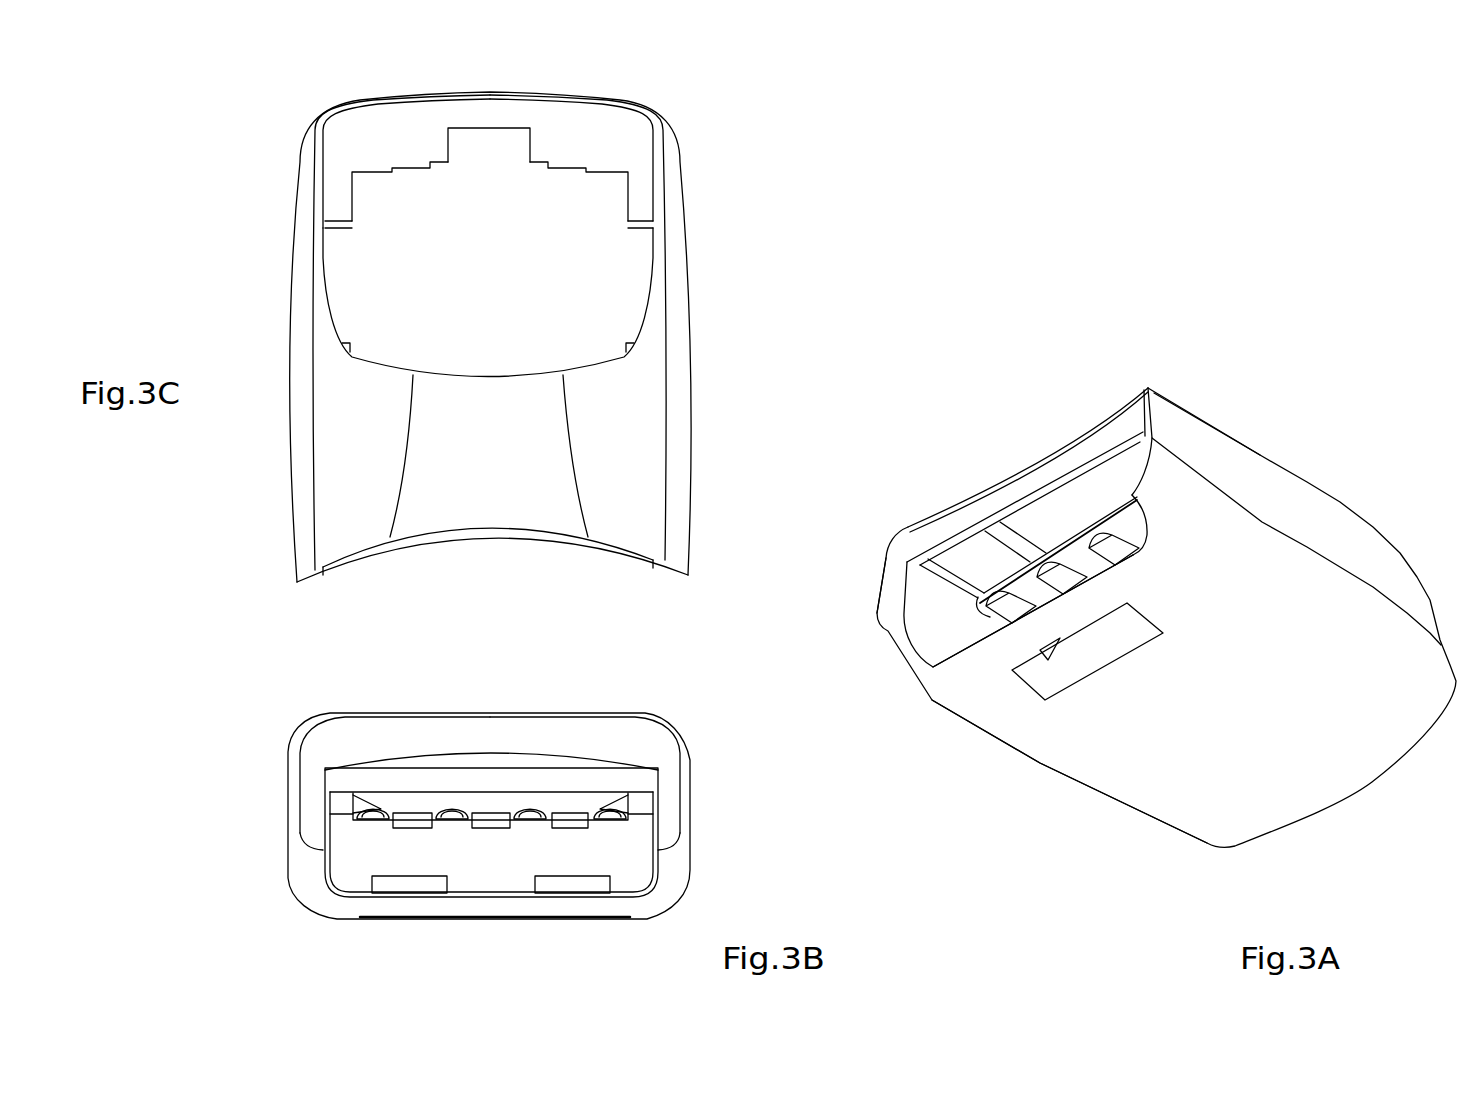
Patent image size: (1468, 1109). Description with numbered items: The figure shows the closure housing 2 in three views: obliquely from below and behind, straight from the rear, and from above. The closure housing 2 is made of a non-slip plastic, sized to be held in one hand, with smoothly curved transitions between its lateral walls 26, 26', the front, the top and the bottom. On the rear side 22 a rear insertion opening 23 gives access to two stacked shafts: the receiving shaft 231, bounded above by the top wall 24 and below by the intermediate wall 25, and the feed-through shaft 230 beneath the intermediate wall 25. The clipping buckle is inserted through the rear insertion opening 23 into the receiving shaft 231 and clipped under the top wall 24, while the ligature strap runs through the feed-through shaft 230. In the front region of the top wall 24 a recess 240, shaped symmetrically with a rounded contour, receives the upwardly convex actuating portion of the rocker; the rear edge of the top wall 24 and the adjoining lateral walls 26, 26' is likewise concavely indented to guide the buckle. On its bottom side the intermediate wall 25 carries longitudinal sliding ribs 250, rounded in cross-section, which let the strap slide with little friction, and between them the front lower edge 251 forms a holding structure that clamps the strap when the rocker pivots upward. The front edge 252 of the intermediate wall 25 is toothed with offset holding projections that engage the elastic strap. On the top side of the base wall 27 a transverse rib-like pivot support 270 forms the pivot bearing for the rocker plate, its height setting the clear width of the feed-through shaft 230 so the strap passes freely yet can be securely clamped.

In FIG. 3C, the closure housing 2 is at (766, 236).
In FIG. 3B, the closure housing 2 is at (242, 749).
In FIG. 3A, the closure housing 2 is at (1206, 363).
In FIG. 3C, the rear side 22 is at (600, 567).
In FIG. 3A, the rear side 22 is at (912, 498).
In FIG. 3C, the rear insertion opening 23 is at (402, 553).
In FIG. 3B, the rear insertion opening 23 is at (358, 850).
In FIG. 3A, the rear insertion opening 23 is at (906, 609).
In FIG. 3C, the top wall 24 is at (337, 442).
In FIG. 3B, the top wall 24 is at (378, 713).
In FIG. 3A, the top wall 24 is at (1040, 461).
In FIG. 3C, the intermediate wall 25 is at (602, 202).
In FIG. 3B, the intermediate wall 25 is at (493, 802).
In FIG. 3A, the intermediate wall 25 is at (1073, 533).
In FIG. 3C, the lateral wall 26 is at (340, 332).
In FIG. 3B, the lateral wall 26 is at (336, 788).
In FIG. 3C, the lateral wall 26' is at (639, 327).
In FIG. 3B, the lateral wall 26' is at (643, 783).
In FIG. 3A, the lateral wall 26' is at (1250, 437).
In FIG. 3B, the base wall 27 is at (510, 913).
In FIG. 3A, the base wall 27 is at (1145, 757).
In FIG. 3A, the feed-through shaft 230 is at (962, 633).
In FIG. 3A, the receiving shaft 231 is at (975, 565).
In FIG. 3C, the recess 240 is at (368, 277).
In FIG. 3B, the sliding ribs 250 is at (445, 810).
In FIG. 3A, the sliding ribs 250 is at (999, 618).
In FIG. 3B, the front lower edge 251 is at (402, 823).
In FIG. 3C, the front edge 252 is at (552, 152).
In FIG. 3B, the pivot support 270 is at (417, 888).